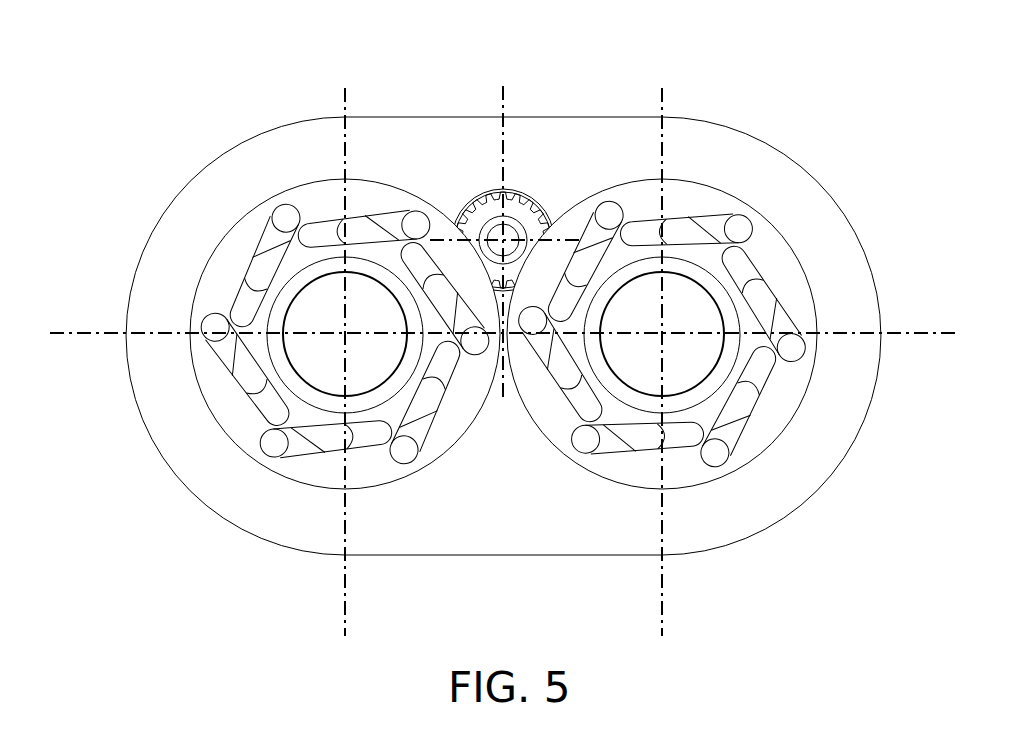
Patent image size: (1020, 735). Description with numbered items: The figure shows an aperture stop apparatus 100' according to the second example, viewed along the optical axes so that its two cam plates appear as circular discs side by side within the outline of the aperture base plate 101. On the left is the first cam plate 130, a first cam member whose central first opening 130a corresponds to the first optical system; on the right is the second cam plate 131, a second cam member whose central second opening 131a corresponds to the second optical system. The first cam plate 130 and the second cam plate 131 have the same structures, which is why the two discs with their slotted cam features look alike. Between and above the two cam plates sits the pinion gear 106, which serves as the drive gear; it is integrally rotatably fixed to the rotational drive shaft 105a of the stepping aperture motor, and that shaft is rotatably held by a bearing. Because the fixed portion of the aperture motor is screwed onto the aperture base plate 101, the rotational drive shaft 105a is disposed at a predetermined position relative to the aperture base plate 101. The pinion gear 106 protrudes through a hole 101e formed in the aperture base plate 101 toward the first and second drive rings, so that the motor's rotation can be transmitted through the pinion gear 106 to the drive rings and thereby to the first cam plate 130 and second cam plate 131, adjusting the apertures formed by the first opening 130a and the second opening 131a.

The aperture stop apparatus 100' is at (505, 331).
The aperture base plate 101 is at (247, 138).
The hole 101e is at (477, 210).
The rotational drive shaft 105a is at (502, 220).
The pinion gear 106 is at (523, 210).
The first cam plate 130 is at (226, 242).
The first opening 130a is at (283, 327).
The second cam plate 131 is at (795, 283).
The second opening 131a is at (703, 292).